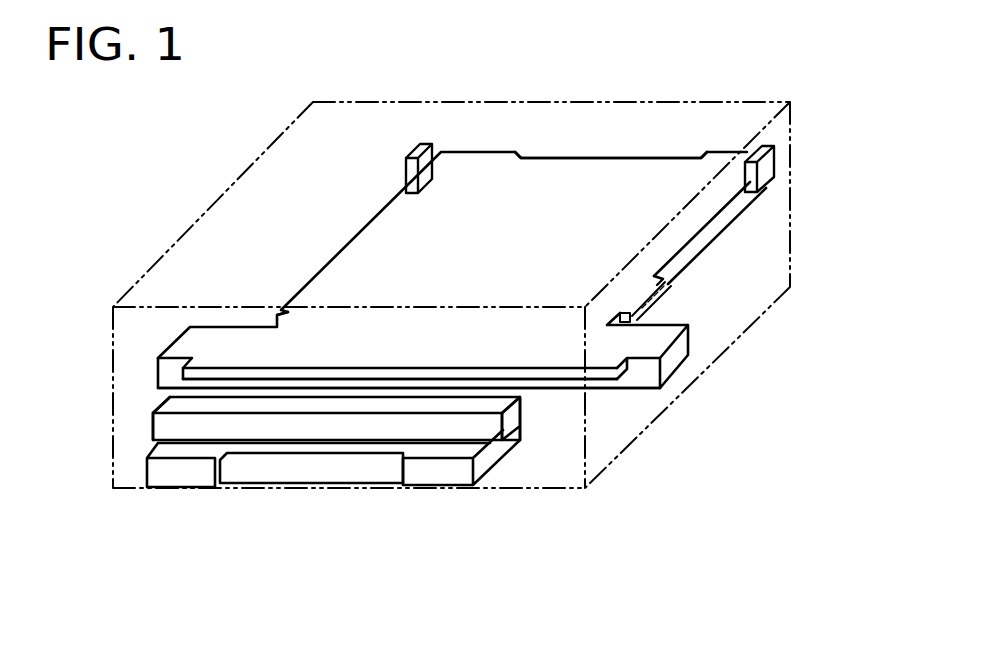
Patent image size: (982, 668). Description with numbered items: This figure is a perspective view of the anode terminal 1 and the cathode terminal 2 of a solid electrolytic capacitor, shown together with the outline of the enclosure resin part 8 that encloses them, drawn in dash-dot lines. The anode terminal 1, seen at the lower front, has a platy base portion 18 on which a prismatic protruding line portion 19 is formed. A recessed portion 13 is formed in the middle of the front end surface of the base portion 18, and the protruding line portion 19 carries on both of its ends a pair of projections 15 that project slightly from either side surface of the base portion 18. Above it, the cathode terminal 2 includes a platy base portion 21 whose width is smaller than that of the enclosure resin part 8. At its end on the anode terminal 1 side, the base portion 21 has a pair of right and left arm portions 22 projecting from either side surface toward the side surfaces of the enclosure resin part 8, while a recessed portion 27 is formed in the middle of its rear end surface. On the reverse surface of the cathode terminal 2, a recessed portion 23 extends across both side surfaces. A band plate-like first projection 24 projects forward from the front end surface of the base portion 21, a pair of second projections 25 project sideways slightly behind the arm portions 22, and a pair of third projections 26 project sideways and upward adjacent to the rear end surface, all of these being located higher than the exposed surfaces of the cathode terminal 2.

The anode terminal 1 is at (292, 517).
The cathode terminal 2 is at (485, 150).
The enclosure resin part 8 is at (626, 101).
The recessed portion 13 is at (363, 470).
The projections 15 is at (153, 428).
The base portion 18 is at (303, 487).
The protruding line portion 19 is at (262, 425).
The base portion 21 is at (390, 243).
The arm portions 22 is at (170, 346).
The recessed portion 23 is at (700, 249).
The first projection 24 is at (603, 374).
The second projections 25 is at (300, 293).
The third projections 26 is at (414, 151).
The recessed portion 27 is at (587, 155).